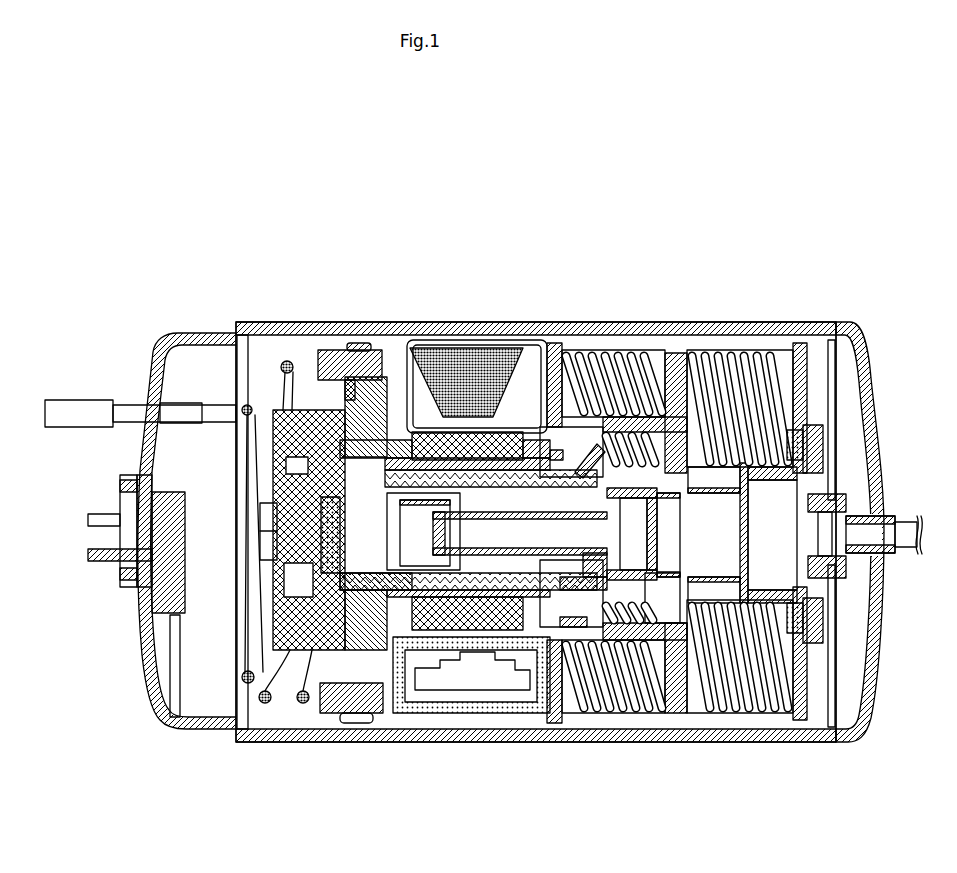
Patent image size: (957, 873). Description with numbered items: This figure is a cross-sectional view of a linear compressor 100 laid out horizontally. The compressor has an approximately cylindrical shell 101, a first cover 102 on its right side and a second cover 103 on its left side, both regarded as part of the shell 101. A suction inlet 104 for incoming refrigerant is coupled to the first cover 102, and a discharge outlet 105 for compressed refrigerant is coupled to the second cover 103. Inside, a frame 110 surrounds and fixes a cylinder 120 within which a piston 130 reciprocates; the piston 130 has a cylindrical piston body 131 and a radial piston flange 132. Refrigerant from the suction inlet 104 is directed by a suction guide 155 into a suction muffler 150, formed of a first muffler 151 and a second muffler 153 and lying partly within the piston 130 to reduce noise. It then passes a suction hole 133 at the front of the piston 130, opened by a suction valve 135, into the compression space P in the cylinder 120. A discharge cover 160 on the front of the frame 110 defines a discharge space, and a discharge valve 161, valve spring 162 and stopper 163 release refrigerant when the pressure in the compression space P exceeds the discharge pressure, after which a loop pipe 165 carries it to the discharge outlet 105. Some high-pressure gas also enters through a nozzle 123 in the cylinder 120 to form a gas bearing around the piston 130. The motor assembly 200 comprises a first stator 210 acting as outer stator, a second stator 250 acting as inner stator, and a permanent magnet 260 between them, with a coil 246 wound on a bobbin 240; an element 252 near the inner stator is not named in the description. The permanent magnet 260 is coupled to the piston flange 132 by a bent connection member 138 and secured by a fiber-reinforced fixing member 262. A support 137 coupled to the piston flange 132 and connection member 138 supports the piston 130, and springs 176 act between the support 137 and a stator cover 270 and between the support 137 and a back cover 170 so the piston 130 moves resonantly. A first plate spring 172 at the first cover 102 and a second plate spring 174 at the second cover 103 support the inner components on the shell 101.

The linear compressor 100 is at (589, 262).
The shell 101 is at (619, 325).
The first cover 102 is at (864, 370).
The second cover 103 is at (195, 334).
The suction inlet 104 is at (900, 516).
The discharge outlet 105 is at (63, 405).
The frame 110 is at (356, 350).
The cylinder 120 is at (401, 350).
The nozzle 123 is at (400, 745).
The piston 130 is at (505, 742).
The piston body 131 is at (591, 350).
The piston flange 132 is at (626, 742).
The suction hole 133 is at (376, 742).
The suction valve 135 is at (318, 684).
The support 137 is at (680, 356).
The connection member 138 is at (557, 742).
The suction muffler 150 is at (665, 742).
The first muffler 151 is at (714, 743).
The second muffler 153 is at (600, 742).
The suction guide 155 is at (868, 581).
The discharge cover 160 is at (148, 590).
The discharge valve 161 is at (263, 588).
The valve spring 162 is at (303, 412).
The stopper 163 is at (263, 510).
The loop pipe 165 is at (246, 444).
The back cover 170 is at (812, 744).
The first plate spring 172 is at (832, 660).
The second plate spring 174 is at (143, 485).
The springs 176 is at (773, 352).
The motor assembly 200 is at (501, 340).
The first stator 210 is at (434, 342).
The bobbin 240 is at (524, 338).
The coil 246 is at (498, 343).
The second stator 250 is at (457, 345).
The inner stator core 252 is at (525, 744).
The permanent magnet 260 is at (478, 343).
The fixing member 262 is at (470, 742).
The stator cover 270 is at (561, 342).
The compression space P is at (240, 715).